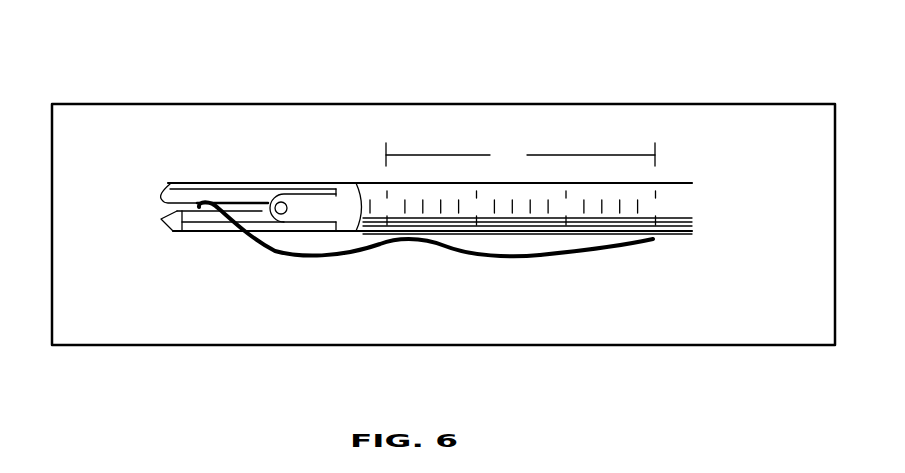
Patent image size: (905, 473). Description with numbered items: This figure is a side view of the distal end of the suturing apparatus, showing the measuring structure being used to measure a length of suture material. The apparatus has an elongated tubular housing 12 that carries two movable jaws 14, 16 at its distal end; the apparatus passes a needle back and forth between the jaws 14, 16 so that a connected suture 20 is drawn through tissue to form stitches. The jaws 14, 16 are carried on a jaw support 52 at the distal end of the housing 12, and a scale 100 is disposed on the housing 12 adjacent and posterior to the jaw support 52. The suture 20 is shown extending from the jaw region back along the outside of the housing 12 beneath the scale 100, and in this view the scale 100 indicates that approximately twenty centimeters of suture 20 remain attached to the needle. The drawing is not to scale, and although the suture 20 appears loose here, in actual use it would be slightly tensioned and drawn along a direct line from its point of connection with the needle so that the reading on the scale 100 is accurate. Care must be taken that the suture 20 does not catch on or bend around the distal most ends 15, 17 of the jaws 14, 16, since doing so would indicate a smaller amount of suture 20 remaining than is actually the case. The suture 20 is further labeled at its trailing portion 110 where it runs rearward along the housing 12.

The tubular housing 12 is at (682, 206).
The jaw 14 is at (182, 232).
The distal most end of jaw 15 is at (170, 184).
The jaw 16 is at (200, 233).
The distal most end of jaw 17 is at (161, 223).
The suture 20 is at (322, 257).
The jaw support 52 is at (340, 207).
The scale 100 is at (509, 141).
The suture end 110 is at (670, 238).